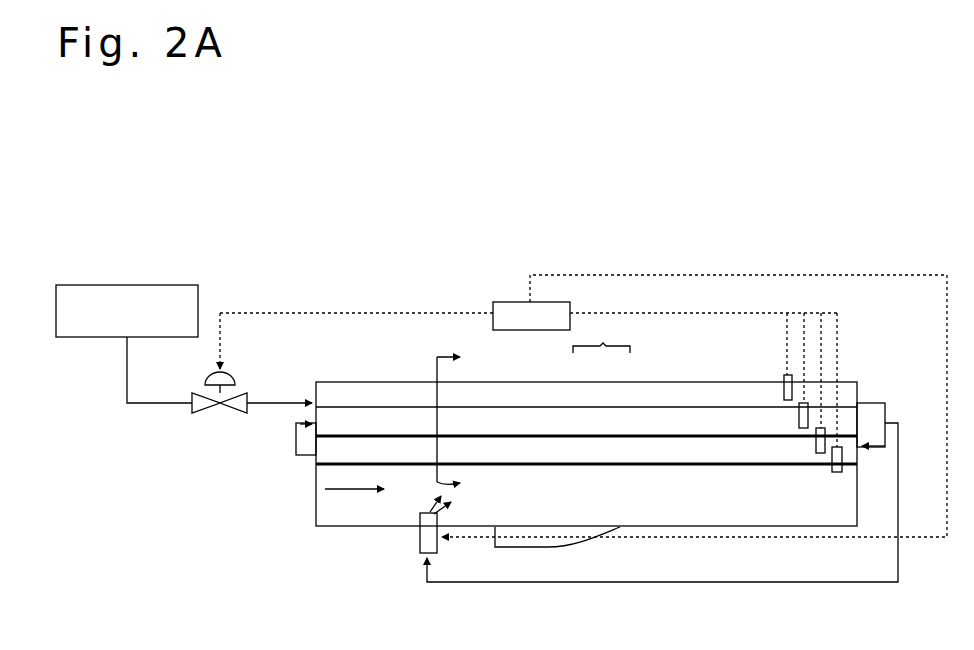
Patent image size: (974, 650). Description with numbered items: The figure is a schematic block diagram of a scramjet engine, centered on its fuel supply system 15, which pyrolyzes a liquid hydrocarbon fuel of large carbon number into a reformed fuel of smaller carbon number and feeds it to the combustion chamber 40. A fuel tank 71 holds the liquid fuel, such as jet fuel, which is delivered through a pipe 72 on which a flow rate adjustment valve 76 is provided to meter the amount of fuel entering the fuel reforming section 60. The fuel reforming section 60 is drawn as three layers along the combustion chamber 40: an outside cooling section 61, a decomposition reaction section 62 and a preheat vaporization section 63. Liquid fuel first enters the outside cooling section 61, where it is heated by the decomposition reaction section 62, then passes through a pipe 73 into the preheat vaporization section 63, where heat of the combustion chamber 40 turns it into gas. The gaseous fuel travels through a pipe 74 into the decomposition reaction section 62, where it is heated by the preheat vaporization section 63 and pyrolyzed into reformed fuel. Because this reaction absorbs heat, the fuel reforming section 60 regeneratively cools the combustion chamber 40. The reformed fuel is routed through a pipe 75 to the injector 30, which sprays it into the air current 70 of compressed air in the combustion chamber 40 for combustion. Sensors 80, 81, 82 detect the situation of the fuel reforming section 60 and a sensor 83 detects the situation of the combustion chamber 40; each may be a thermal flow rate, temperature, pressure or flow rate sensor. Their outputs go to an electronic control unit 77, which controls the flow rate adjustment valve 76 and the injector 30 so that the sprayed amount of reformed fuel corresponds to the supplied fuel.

The fuel supply system 15 is at (310, 270).
The injector 30 is at (420, 546).
The combustion chamber 40 is at (316, 508).
The fuel reforming section 60 is at (601, 336).
The outside cooling section 61 is at (568, 398).
The decomposition reaction section 62 is at (603, 420).
The preheat vaporization section 63 is at (633, 445).
The air current 70 is at (350, 491).
The fuel tank 71 is at (121, 285).
The pipe 72 is at (163, 406).
The pipe 73 is at (870, 403).
The pipe 74 is at (296, 445).
The pipe 75 is at (640, 583).
The flow rate adjustment valve 76 is at (236, 382).
The electronic control unit (ECU) 77 is at (512, 302).
The sensor 80 is at (783, 380).
The sensor 81 is at (798, 420).
The sensor 82 is at (816, 448).
The sensor 83 is at (836, 472).